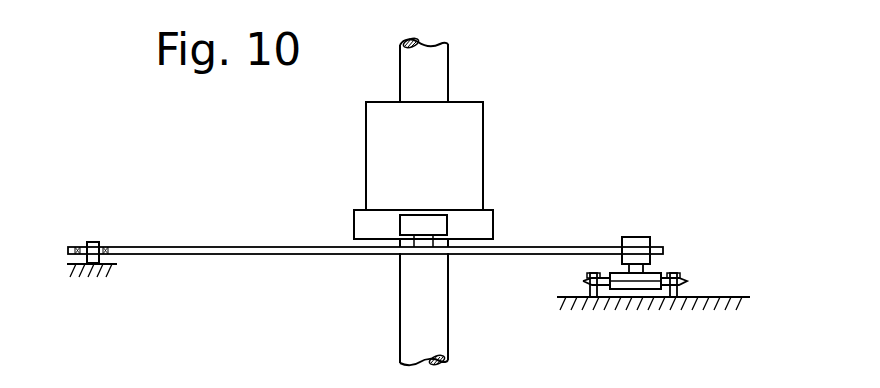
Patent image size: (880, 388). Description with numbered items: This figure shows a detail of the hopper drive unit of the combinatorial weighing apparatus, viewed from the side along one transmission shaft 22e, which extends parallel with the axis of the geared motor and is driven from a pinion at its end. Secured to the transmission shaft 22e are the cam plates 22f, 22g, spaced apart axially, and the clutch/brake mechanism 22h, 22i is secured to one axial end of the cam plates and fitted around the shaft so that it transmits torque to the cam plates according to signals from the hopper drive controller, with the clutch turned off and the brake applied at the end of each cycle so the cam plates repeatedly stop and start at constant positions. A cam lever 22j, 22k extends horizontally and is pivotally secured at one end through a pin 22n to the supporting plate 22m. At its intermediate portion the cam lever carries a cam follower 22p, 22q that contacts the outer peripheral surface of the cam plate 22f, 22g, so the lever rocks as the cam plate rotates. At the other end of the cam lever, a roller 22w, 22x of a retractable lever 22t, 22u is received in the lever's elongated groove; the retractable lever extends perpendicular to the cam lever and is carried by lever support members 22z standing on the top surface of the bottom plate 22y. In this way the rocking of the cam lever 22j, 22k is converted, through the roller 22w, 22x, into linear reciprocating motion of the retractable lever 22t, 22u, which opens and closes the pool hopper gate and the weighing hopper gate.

The transmission shaft 22e is at (445, 72).
The clutch/brake mechanism 22h is at (483, 156).
The clutch/brake mechanism 22i is at (473, 133).
The cam plate 22f is at (477, 201).
The cam plate 22g is at (487, 222).
The cam follower 22p is at (383, 266).
The cam follower 22q is at (405, 227).
The cam lever 22j is at (365, 226).
The cam lever 22k is at (203, 247).
The pin 22n is at (97, 242).
The supporting plate 22m is at (83, 273).
The roller 22w is at (669, 232).
The roller 22x is at (643, 237).
The retractable lever 22t is at (635, 319).
The retractable lever 22u is at (640, 283).
The lever support member 22z is at (583, 288).
The bottom plate 22y is at (740, 297).